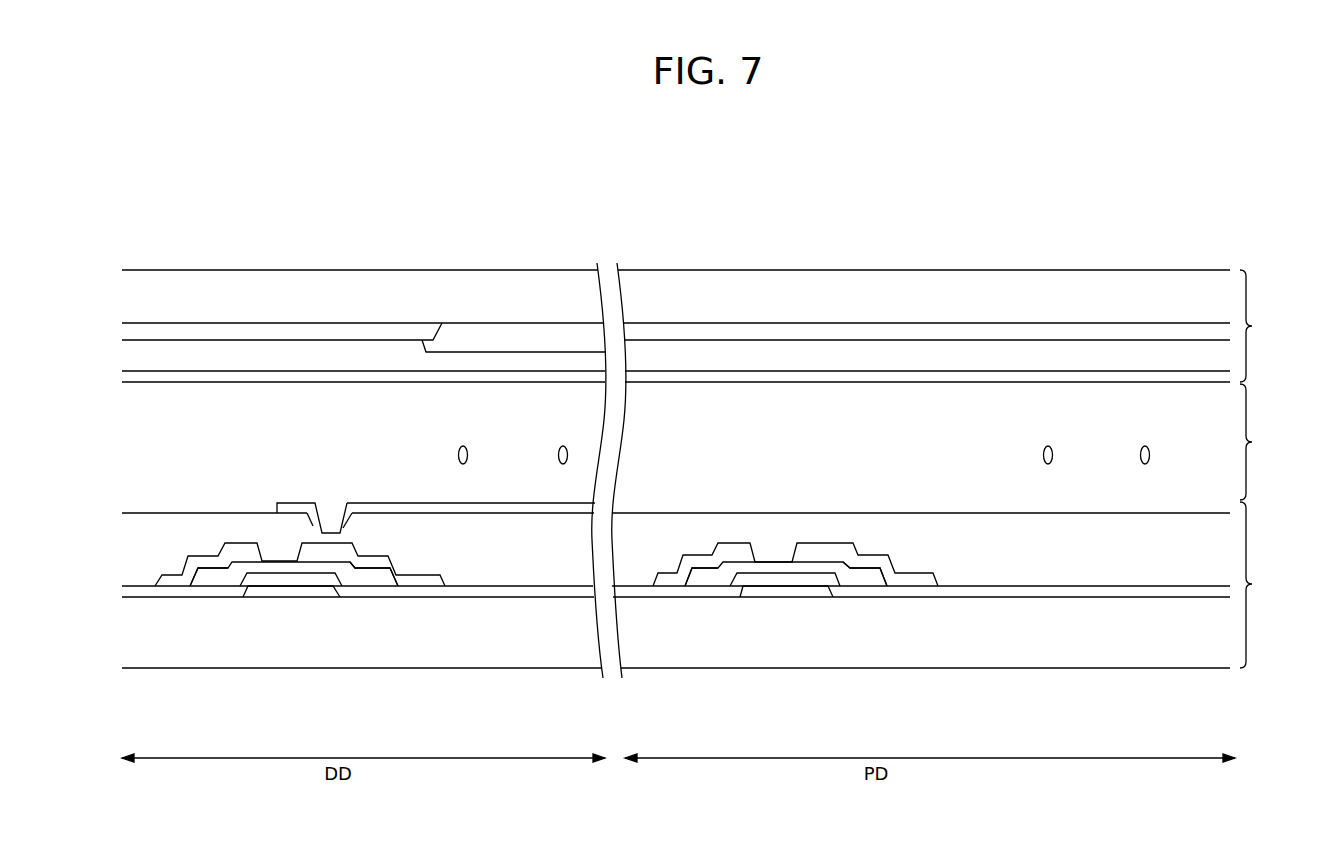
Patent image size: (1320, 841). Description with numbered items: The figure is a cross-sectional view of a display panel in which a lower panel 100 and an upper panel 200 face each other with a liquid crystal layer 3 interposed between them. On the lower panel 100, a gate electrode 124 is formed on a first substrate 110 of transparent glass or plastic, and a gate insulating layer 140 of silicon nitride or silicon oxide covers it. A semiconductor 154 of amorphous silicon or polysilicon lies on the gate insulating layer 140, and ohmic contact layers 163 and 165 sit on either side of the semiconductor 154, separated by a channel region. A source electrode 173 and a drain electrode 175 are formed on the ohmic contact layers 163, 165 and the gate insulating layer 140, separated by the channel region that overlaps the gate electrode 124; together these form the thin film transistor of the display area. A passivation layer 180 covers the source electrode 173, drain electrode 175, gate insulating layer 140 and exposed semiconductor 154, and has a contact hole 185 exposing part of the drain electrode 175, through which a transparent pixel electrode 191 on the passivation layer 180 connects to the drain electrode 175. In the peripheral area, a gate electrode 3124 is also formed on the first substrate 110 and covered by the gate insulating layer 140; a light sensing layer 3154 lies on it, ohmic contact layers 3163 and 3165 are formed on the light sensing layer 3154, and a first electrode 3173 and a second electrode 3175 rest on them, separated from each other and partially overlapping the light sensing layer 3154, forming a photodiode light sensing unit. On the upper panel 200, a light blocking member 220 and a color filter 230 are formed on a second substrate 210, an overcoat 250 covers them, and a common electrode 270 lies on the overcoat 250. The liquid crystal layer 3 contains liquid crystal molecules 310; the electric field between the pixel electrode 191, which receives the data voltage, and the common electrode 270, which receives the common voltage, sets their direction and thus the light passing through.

The lower panel 100 is at (1266, 585).
The upper panel 200 is at (1266, 326).
The liquid crystal layer 3 is at (1257, 442).
The first substrate 110 is at (343, 656).
The gate electrode 124 is at (288, 594).
The gate insulating layer 140 is at (512, 593).
The semiconductor 154 is at (228, 568).
The ohmic contact layer 163 is at (200, 572).
The ohmic contact layer 165 is at (390, 575).
The source electrode 173 is at (227, 553).
The drain electrode 175 is at (372, 562).
The passivation layer 180 is at (565, 556).
The contact hole 185 is at (318, 520).
The pixel electrode 191 is at (398, 503).
The second substrate 210 is at (179, 283).
The light blocking member 220 is at (255, 338).
The color filter 230 is at (462, 333).
The overcoat 250 is at (334, 361).
The common electrode 270 is at (544, 377).
The liquid crystal molecule 310 is at (469, 455).
The gate electrode 3124 is at (788, 594).
The light sensing layer 3154 is at (726, 568).
The ohmic contact layer 3163 is at (690, 572).
The ohmic contact layer 3165 is at (884, 574).
The first electrode 3173 is at (722, 553).
The second electrode 3175 is at (868, 562).